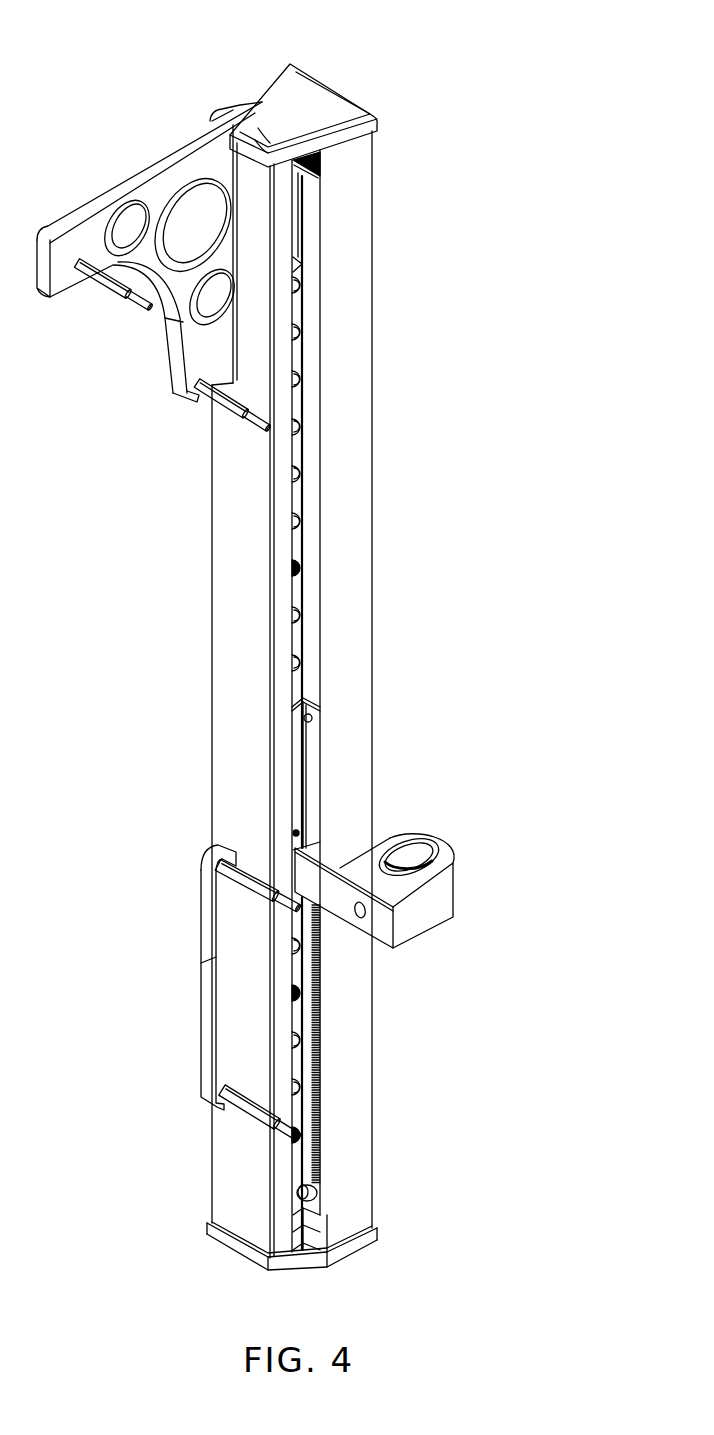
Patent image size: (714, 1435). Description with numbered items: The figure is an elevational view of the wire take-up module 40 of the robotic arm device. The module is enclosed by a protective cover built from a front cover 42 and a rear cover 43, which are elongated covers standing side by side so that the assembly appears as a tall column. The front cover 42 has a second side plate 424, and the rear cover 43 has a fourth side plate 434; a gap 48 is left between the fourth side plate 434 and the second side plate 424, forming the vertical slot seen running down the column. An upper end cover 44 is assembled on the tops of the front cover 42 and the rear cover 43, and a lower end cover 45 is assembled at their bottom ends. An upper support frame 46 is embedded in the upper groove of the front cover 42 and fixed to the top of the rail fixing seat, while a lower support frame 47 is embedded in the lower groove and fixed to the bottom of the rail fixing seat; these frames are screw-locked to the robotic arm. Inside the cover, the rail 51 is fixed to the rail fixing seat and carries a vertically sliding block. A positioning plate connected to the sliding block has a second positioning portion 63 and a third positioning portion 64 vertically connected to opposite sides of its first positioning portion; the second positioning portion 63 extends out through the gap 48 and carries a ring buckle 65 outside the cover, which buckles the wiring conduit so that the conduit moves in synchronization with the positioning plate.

The wire take-up module 40 is at (510, 104).
The front cover 42 is at (210, 671).
The second side plate 424 is at (284, 512).
The rear cover 43 is at (375, 643).
The fourth side plate 434 is at (348, 483).
The upper end cover 44 is at (301, 96).
The lower end cover 45 is at (300, 1252).
The upper support frame 46 is at (162, 180).
The lower support frame 47 is at (222, 1005).
The gap 48 is at (298, 203).
The rail 51 is at (300, 352).
The second positioning portion 63 is at (333, 903).
The third positioning portion 64 is at (312, 750).
The ring buckle 65 is at (413, 912).